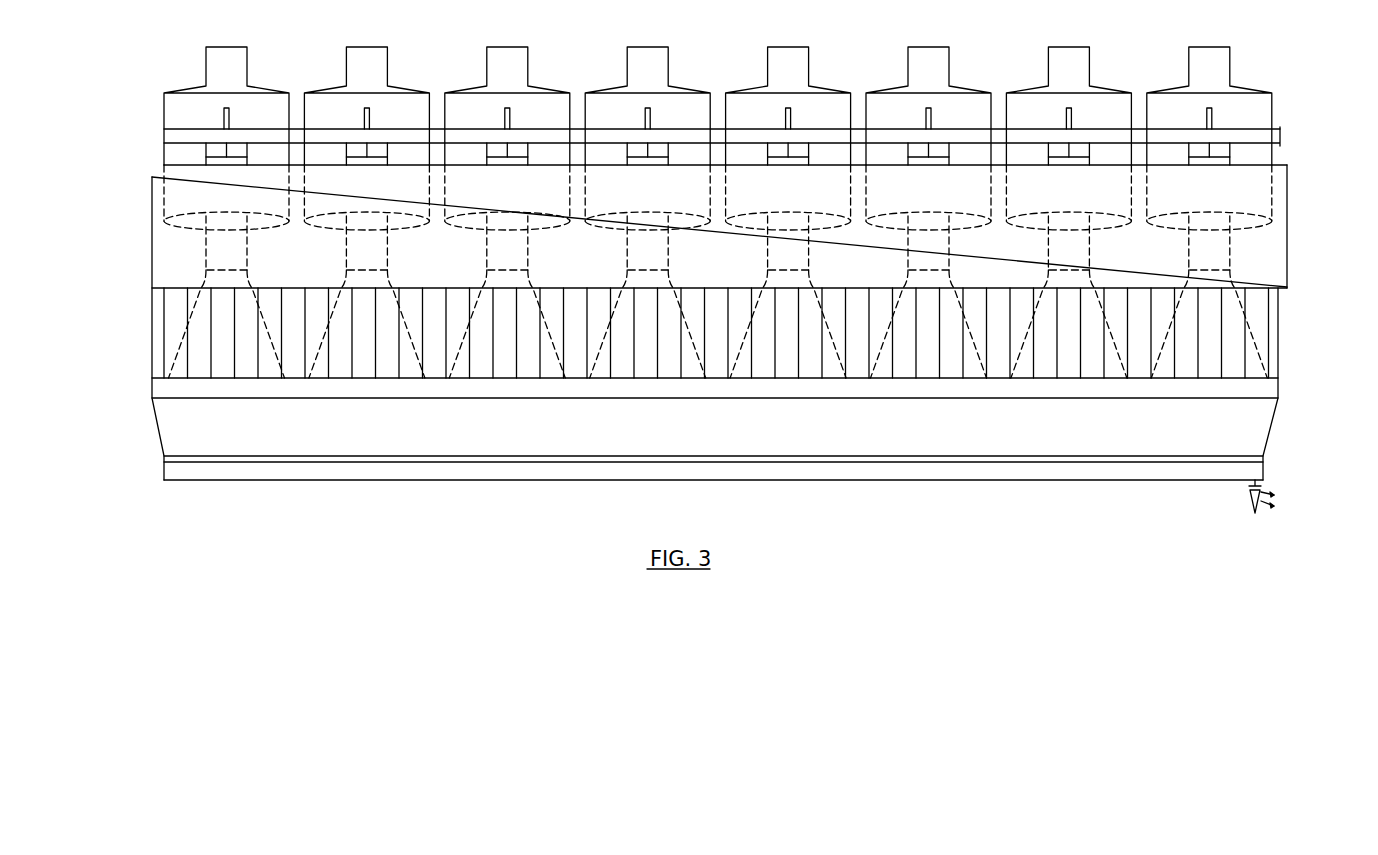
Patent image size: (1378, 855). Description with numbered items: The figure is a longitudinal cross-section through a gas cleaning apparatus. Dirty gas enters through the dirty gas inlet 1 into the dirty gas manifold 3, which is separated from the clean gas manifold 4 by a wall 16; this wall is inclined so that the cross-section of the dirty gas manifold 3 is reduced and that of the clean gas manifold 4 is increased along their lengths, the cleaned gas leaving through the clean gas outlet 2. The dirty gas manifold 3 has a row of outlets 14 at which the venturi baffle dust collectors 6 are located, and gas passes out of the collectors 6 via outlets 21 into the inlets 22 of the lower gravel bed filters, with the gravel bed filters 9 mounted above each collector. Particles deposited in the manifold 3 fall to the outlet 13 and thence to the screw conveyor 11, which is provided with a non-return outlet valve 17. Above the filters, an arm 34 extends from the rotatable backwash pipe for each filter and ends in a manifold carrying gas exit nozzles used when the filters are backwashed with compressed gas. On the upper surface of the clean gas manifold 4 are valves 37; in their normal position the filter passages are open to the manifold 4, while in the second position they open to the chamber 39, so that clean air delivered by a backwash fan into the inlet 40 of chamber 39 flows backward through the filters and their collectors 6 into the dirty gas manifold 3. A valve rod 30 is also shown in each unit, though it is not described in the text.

The dirty gas inlet 1 is at (152, 237).
The clean gas outlet 2 is at (1288, 250).
The dirty gas manifold 3 is at (167, 267).
The clean gas manifold 4 is at (1263, 273).
The first bank of venturi baffle dust collectors 6 is at (715, 333).
The second bank of gravel bed filters 9 is at (318, 101).
The screw conveyor 11 is at (745, 470).
The outlet 13 is at (713, 460).
The outlets 14 is at (244, 362).
The wall 16 is at (180, 181).
The non-return outlet valve 17 is at (1250, 492).
The outlets 21 is at (232, 278).
The inlets 22 is at (353, 254).
The valve rod 30 is at (363, 120).
The arm 34 is at (244, 146).
The valves 37 is at (372, 158).
The chamber 39 is at (693, 130).
The inlet 40 is at (1284, 134).